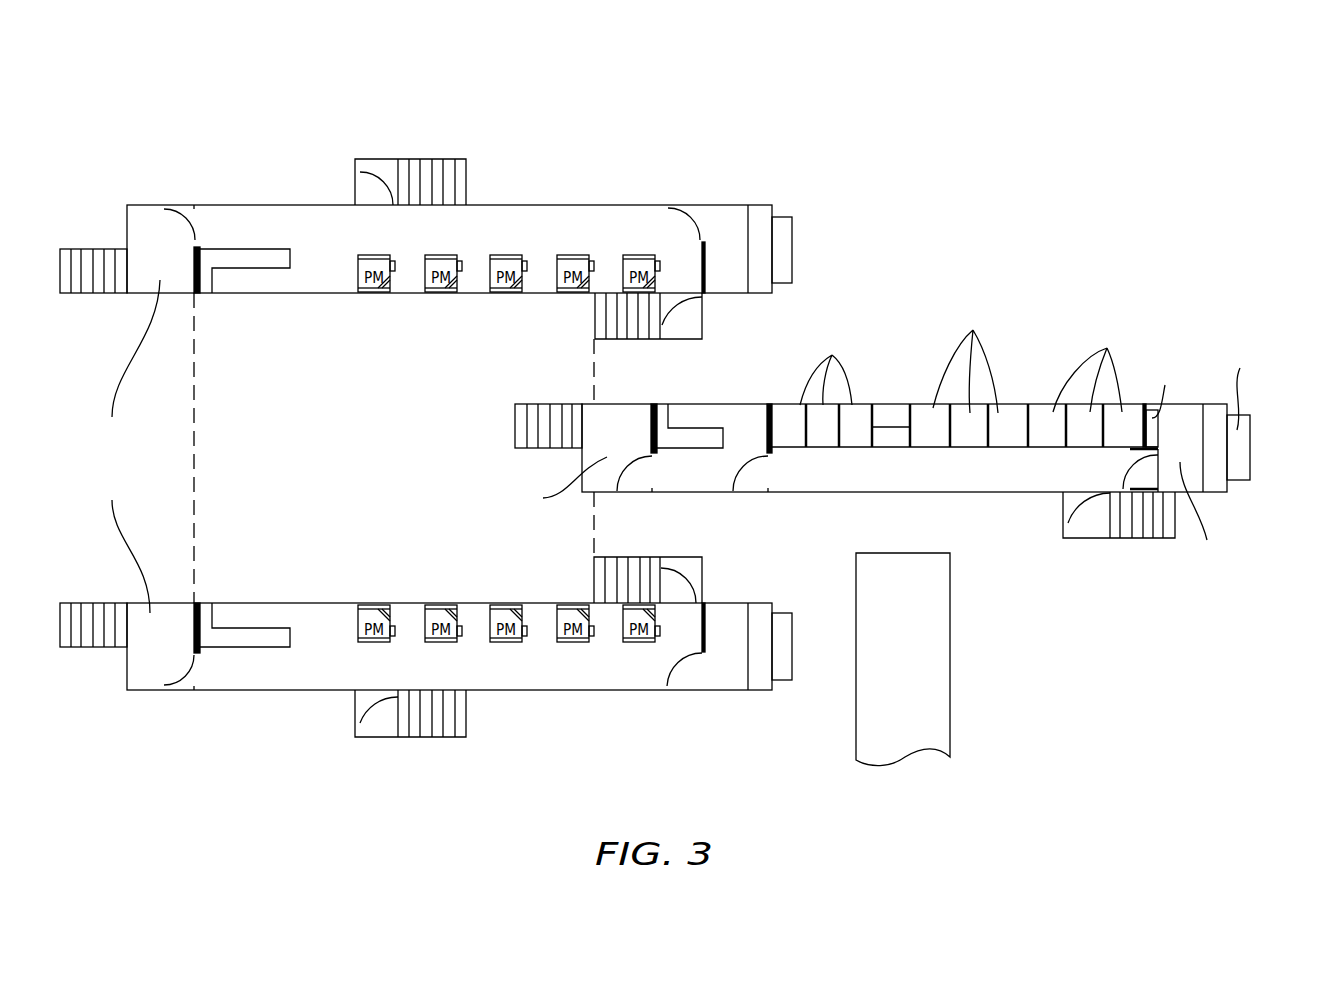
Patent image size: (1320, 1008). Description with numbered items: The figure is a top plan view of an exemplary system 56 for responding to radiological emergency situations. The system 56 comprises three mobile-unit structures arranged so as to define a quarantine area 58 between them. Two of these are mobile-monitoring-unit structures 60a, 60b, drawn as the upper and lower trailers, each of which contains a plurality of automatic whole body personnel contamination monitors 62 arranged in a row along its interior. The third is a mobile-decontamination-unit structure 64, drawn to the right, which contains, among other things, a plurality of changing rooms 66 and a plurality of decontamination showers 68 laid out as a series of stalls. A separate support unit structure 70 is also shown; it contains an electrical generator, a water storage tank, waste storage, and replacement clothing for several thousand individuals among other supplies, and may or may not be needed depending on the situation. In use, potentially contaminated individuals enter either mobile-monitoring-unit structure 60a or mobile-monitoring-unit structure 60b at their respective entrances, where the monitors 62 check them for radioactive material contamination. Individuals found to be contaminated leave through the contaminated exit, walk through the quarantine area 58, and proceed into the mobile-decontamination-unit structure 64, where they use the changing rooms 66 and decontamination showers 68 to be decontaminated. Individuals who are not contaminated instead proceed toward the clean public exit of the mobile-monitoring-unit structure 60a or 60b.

The system for responding to radiological emergency situations 56 is at (210, 132).
The quarantine area 58 is at (320, 467).
The mobile-monitoring-unit structure 60a is at (583, 194).
The mobile-monitoring-unit structure 60b is at (540, 700).
The automatic whole body personnel contamination monitor 62 is at (374, 254).
The mobile-decontamination-unit structure 64 is at (894, 394).
The changing room 66 is at (787, 407).
The decontamination shower 68 is at (1010, 415).
The support unit structure 70 is at (950, 670).